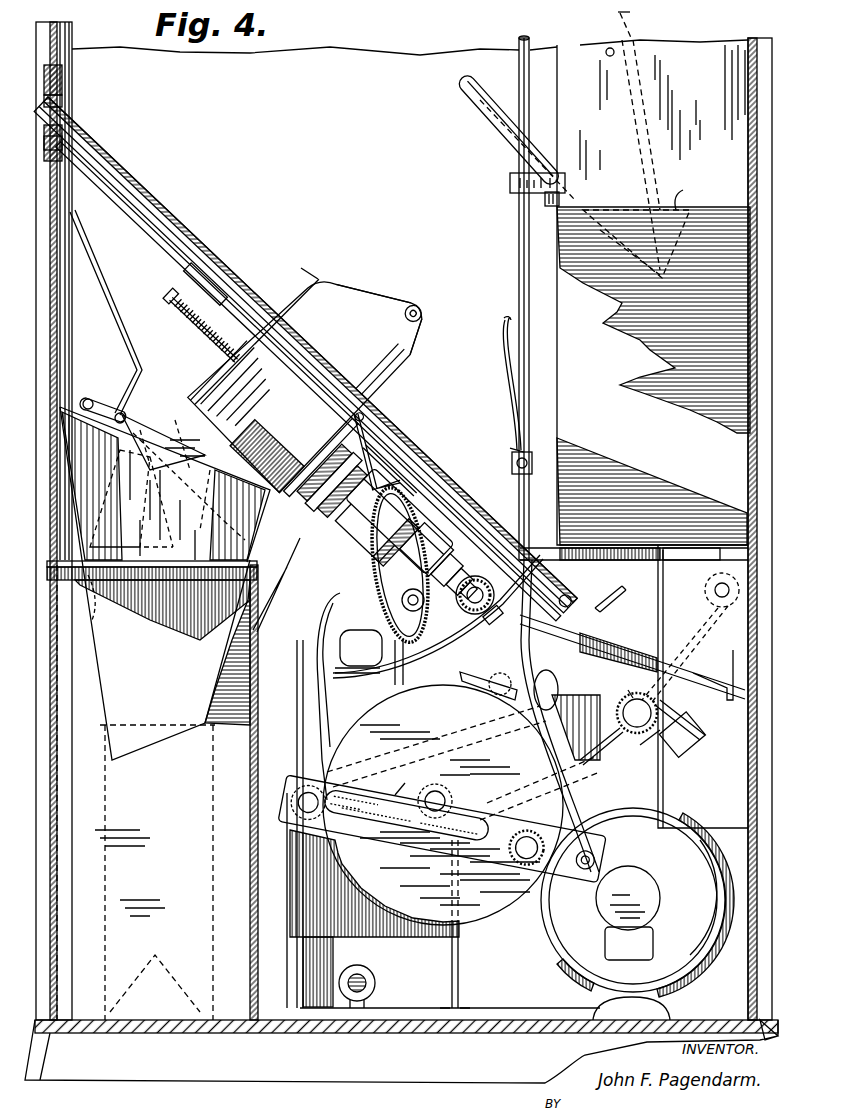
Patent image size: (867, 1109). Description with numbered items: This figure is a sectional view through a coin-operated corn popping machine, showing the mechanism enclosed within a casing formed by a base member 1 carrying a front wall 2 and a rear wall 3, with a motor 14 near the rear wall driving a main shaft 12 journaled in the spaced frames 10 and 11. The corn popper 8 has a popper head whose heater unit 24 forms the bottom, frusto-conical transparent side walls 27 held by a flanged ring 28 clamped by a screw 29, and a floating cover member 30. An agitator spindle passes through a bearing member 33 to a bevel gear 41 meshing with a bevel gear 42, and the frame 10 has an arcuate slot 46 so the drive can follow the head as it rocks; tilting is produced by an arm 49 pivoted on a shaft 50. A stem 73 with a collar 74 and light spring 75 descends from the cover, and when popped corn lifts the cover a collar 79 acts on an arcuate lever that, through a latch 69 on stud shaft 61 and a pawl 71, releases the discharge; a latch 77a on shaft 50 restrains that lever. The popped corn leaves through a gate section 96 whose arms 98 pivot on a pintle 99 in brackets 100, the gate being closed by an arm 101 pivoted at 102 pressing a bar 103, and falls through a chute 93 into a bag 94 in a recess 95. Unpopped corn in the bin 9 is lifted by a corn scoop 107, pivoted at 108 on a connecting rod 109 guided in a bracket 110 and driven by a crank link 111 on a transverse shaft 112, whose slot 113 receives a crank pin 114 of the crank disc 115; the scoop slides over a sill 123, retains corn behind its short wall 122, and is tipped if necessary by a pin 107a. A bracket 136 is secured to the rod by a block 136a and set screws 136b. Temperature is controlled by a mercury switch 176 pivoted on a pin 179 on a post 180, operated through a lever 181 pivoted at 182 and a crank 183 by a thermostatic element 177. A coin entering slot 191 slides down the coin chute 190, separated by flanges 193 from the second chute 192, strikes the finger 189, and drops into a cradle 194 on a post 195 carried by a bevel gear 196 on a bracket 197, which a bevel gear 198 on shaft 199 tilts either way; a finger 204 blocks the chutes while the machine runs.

The base member 1 is at (240, 1084).
The front wall 2 is at (52, 643).
The rear wall 3 is at (760, 628).
The corn popper 8 is at (311, 364).
The bin 9 is at (635, 302).
The frame 10 is at (300, 558).
The frame 11 is at (290, 897).
The main shaft 12 is at (446, 793).
The motor 14 is at (637, 914).
The heater unit 24 is at (380, 369).
The side walls 27 is at (373, 294).
The flanged ring 28 is at (415, 337).
The screw 29 is at (413, 313).
The floating cover member 30 is at (329, 281).
The bearing member 33 is at (374, 519).
The bevel gear 41 is at (480, 574).
The bevel gear 42 is at (484, 587).
The arcuate slot 46 is at (361, 648).
The arm 49 is at (405, 680).
The shaft 50 is at (366, 982).
The stud shaft 61 is at (558, 688).
The latch 69 is at (482, 684).
The pawl 71 is at (440, 662).
The stem 73 is at (205, 328).
The collar 74 is at (170, 296).
The spring 75 is at (202, 331).
The latch 77a is at (325, 712).
The collar 79 is at (486, 628).
The chute 93 is at (158, 661).
The bag 94 is at (104, 886).
The recess 95 is at (65, 780).
The gate section 96 is at (175, 548).
The upturned arms 98 is at (152, 388).
The pintle 99 is at (104, 404).
The brackets 100 is at (160, 402).
The arm 101 is at (96, 252).
The pivot 102 is at (92, 620).
The bar 103 is at (86, 398).
The corn scoop 107 is at (482, 102).
The pin 107a is at (605, 55).
The pivot 108 is at (610, 296).
The connecting rod 109 is at (656, 173).
The bracket 110 is at (510, 183).
The crank link 111 is at (472, 822).
The transverse shaft 112 is at (306, 788).
The slot 113 is at (392, 800).
The crank pin 114 is at (540, 832).
The crank disc 115 is at (478, 917).
The short wall 122 is at (686, 196).
The sill 123 is at (543, 199).
The bracket 136 is at (510, 342).
The block 136a is at (512, 447).
The set screws 136b is at (513, 462).
The switch 176 is at (382, 584).
The thermostatic element 177 is at (321, 457).
The pin 179 is at (463, 585).
The post 180 is at (433, 556).
The lever 181 is at (369, 455).
The pivot 182 is at (390, 470).
The crank 183 is at (424, 620).
The finger 189 is at (618, 612).
The coin chute 190 is at (305, 355).
The coin slot 191 is at (53, 122).
The second chute 192 is at (206, 284).
The flanges 193 is at (308, 381).
The cradle 194 is at (618, 640).
The post 195 is at (692, 706).
The bevel gear 196 is at (656, 740).
The bracket 197 is at (688, 760).
The bevel gear 198 is at (622, 712).
The shaft 199 is at (632, 700).
The finger 204 is at (359, 416).